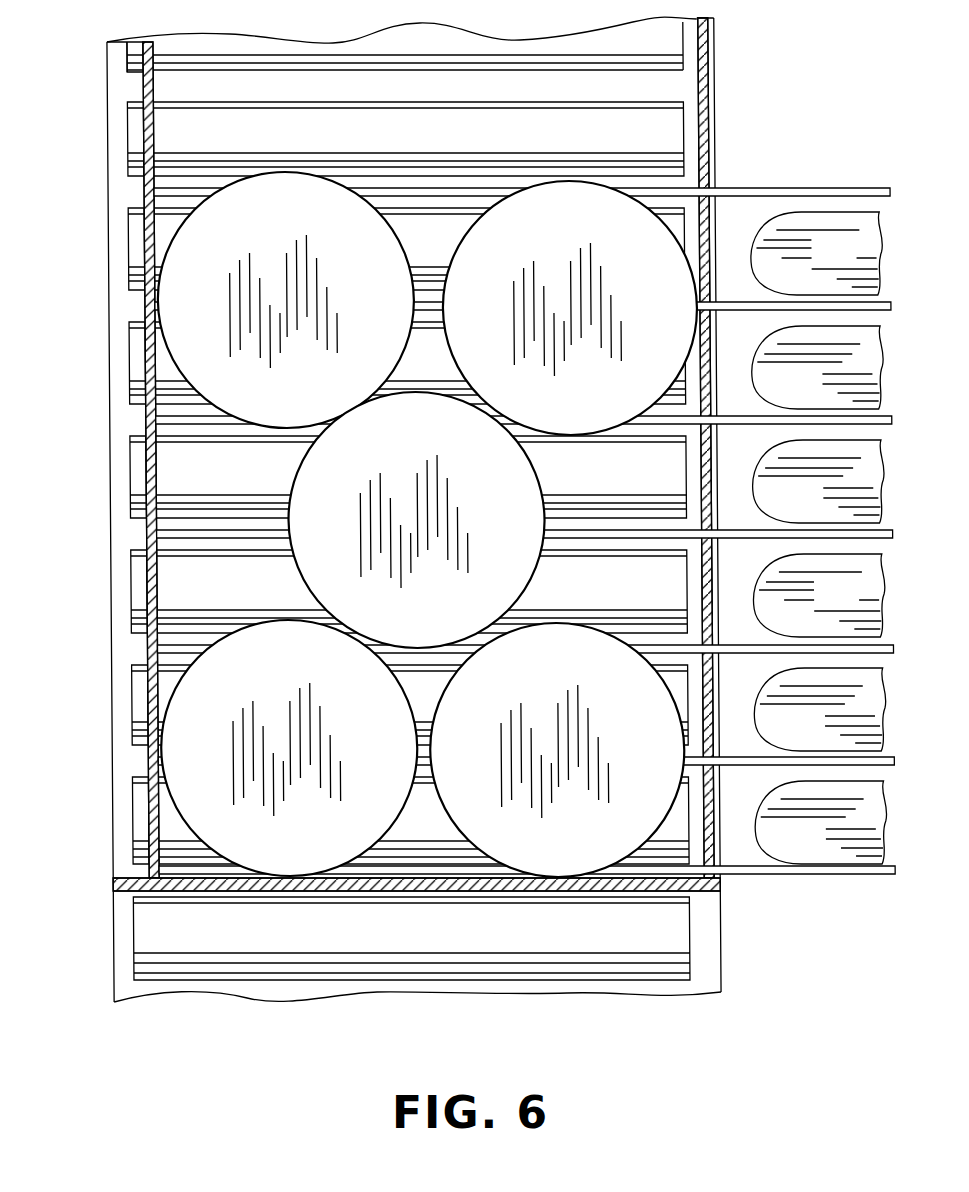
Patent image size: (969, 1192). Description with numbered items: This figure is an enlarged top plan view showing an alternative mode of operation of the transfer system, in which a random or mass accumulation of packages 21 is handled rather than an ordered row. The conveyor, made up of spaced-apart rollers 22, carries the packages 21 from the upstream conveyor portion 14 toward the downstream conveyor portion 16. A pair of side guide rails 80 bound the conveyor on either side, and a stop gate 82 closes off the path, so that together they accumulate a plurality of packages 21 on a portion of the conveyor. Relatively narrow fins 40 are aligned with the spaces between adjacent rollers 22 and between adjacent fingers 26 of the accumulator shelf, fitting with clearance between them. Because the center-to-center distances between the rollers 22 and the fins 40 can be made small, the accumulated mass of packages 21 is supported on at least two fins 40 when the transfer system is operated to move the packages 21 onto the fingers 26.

The upstream conveyor portion 14 is at (133, 65).
The downstream conveyor portion 16 is at (712, 982).
The packages 21 is at (291, 236).
The rollers 22 is at (133, 137).
The fingers 26 is at (851, 259).
The fins 40 is at (175, 199).
The side guide rails 80 is at (150, 705).
The stop gate 82 is at (692, 890).